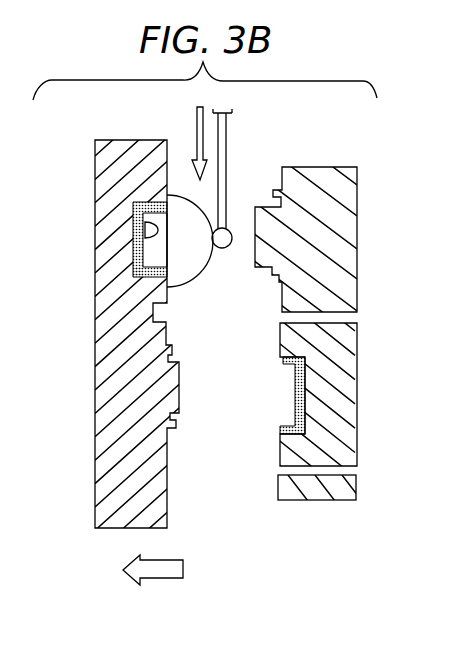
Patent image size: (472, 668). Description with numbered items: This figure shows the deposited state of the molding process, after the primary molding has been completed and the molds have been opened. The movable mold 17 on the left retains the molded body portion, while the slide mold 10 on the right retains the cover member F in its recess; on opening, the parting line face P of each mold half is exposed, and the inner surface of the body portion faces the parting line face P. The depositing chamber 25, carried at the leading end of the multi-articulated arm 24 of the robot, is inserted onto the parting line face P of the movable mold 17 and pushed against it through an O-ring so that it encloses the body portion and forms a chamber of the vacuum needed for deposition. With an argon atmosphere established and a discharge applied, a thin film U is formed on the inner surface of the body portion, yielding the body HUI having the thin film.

The slide mold 10 is at (325, 167).
The movable mold 17 is at (142, 140).
The multi-articulated arm 24 is at (227, 133).
The depositing chamber 25 is at (198, 281).
The thin film U is at (133, 221).
The body having the thin film HUI is at (132, 279).
The cover member F is at (295, 398).
The parting line face P is at (167, 463).